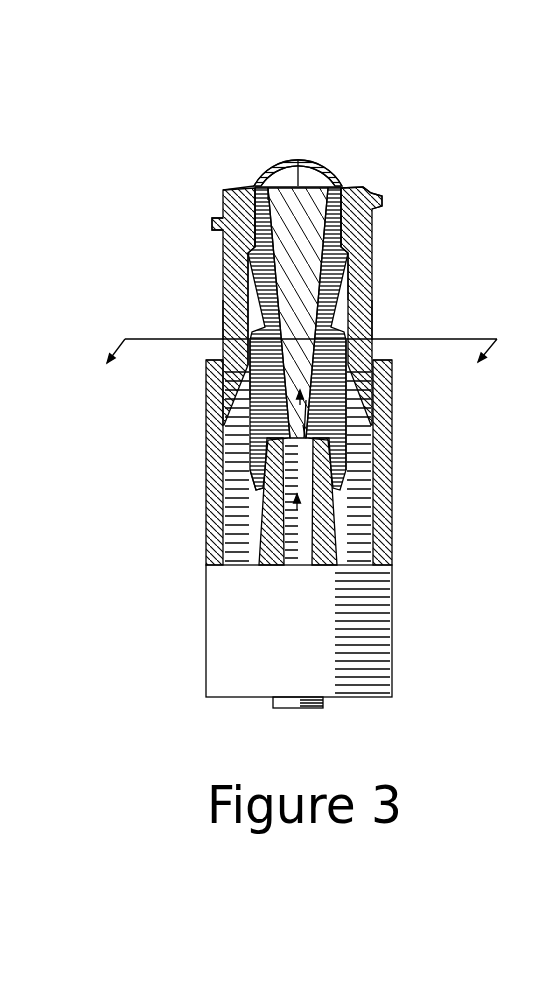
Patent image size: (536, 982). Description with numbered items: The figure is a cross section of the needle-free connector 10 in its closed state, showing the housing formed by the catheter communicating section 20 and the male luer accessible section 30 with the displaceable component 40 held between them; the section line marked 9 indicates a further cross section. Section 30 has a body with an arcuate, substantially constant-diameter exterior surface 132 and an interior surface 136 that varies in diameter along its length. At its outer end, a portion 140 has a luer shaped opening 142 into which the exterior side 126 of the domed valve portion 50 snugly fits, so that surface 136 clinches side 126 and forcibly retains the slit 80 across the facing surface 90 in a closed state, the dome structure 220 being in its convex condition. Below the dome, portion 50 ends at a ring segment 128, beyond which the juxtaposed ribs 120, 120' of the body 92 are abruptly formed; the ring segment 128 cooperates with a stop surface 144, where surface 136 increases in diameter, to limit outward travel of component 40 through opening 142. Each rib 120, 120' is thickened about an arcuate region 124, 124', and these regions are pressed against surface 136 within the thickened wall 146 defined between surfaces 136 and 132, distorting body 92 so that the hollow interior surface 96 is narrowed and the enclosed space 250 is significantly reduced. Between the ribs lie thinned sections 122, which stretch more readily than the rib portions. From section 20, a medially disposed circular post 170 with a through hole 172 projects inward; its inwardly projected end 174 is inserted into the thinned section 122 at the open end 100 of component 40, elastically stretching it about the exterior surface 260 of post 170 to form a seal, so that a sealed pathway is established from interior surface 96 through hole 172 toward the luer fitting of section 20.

The section line 9- 9 is at (295, 366).
The needle-free connector 10 is at (473, 253).
The line or catheter communicating section 20 is at (419, 653).
The male luer accessible section 30 is at (223, 272).
The displaceable component 40 is at (234, 112).
The domed valve portion 50 is at (275, 147).
The slit 80 is at (296, 160).
The facing surface 90 is at (262, 162).
The body 92 is at (394, 373).
The hollow interior surface 96 is at (223, 282).
The open end 100 is at (340, 492).
The rib 120 is at (221, 339).
The rib 120' is at (413, 405).
The thinned sections 122 is at (392, 443).
The arcuate region 124 is at (167, 318).
The arcuate region 124' is at (427, 318).
The exterior side 126 is at (357, 184).
The ring segment 128 is at (347, 254).
The exterior surface 132 is at (223, 348).
The interior surface 136 is at (381, 197).
The portion 140 is at (238, 180).
The luer shaped opening 142 is at (238, 180).
The stop surface 144 is at (202, 205).
The wall 146 is at (360, 270).
The post 170 is at (337, 527).
The through hole 172 is at (283, 500).
The inwardly projected end 174 is at (258, 455).
The dome structure 220 is at (316, 160).
The restricted space 250 is at (290, 406).
The exterior surface 260 is at (260, 527).